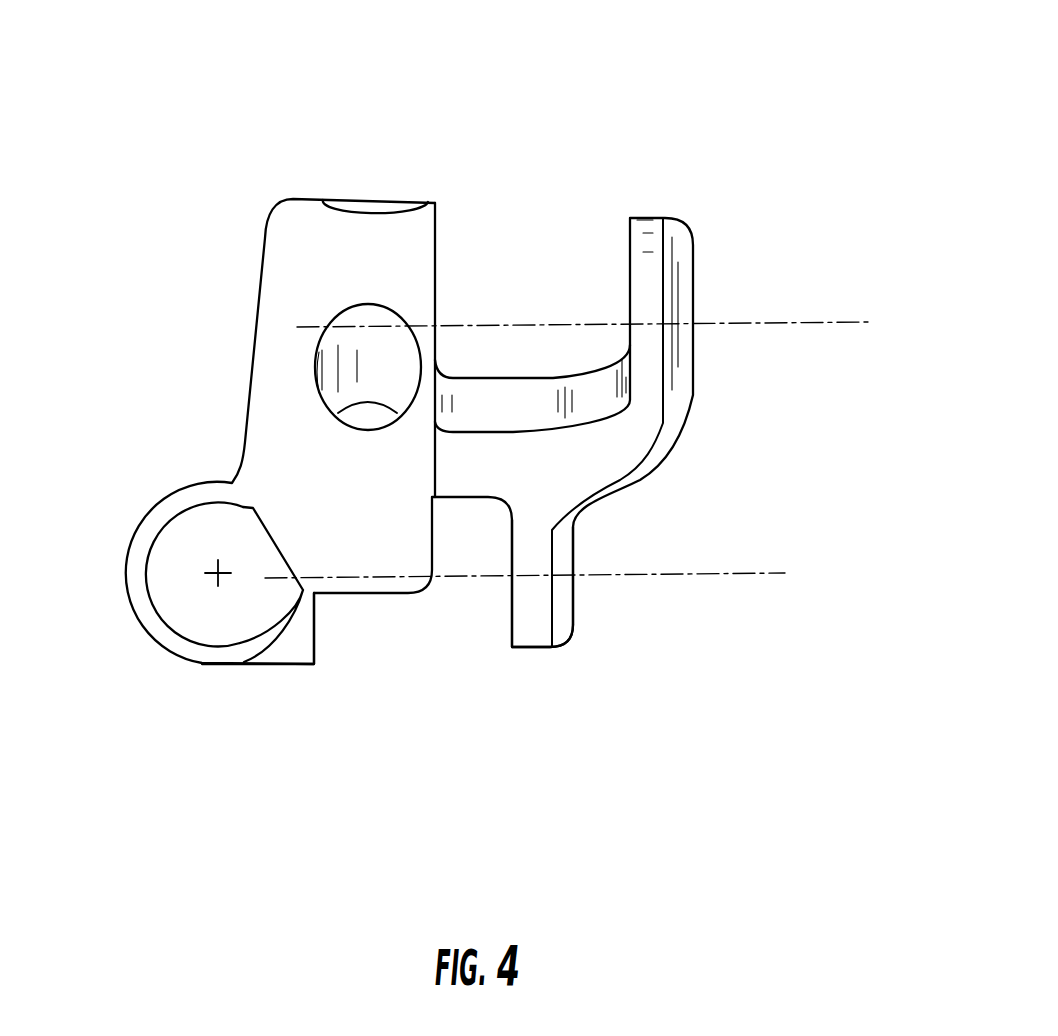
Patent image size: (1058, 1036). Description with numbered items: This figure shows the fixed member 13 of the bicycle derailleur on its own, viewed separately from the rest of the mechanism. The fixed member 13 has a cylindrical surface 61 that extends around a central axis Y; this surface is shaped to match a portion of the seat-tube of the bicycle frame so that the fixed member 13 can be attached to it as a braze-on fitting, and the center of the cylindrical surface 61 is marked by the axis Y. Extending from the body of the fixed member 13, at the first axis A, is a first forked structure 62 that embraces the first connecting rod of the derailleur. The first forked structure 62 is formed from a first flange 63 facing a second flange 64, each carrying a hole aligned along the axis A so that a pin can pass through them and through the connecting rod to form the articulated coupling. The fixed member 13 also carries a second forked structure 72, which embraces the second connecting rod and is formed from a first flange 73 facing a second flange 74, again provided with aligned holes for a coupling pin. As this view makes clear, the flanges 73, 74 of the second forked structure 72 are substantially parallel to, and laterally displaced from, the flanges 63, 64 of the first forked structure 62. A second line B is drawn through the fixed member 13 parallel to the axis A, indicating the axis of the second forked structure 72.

The fixed member 13 is at (210, 208).
The cylindrical surface 61 is at (137, 612).
The first forked structure 62 is at (560, 120).
The first flange 63 is at (437, 230).
The second flange 64 is at (655, 217).
The second forked structure 72 is at (435, 680).
The first flange 73 is at (316, 631).
The second flange 74 is at (533, 648).
The first axis A is at (820, 322).
The axis B is at (762, 572).
The central axis Y is at (208, 570).